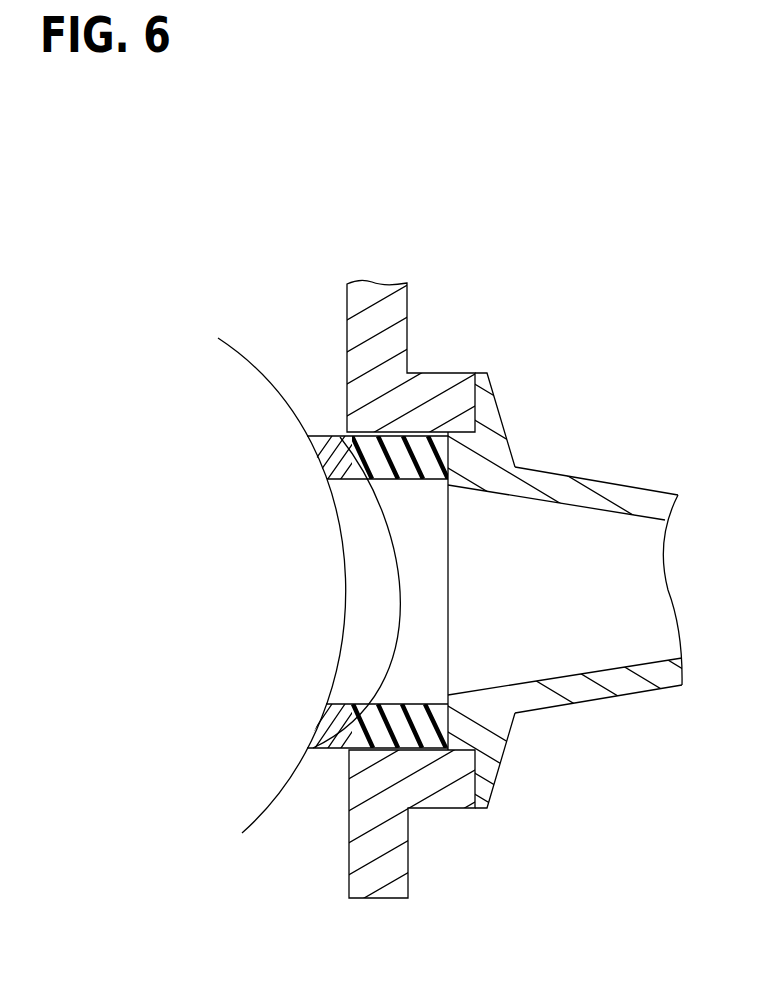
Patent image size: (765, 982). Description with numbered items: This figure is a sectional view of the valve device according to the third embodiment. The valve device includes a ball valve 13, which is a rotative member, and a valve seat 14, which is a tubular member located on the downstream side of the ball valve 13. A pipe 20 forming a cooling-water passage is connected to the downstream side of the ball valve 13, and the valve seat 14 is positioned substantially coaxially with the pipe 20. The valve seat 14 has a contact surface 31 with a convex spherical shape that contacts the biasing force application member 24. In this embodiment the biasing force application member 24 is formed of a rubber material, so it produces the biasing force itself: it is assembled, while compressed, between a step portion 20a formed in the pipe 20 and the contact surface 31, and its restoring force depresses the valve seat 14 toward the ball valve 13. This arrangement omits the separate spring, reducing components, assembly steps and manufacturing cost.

The ball valve 13 is at (227, 373).
The valve seat 14 is at (335, 728).
The pipe 20 is at (560, 608).
The step portion 20a is at (436, 735).
The biasing force application member 24 is at (397, 727).
The contact surface 31 is at (362, 740).